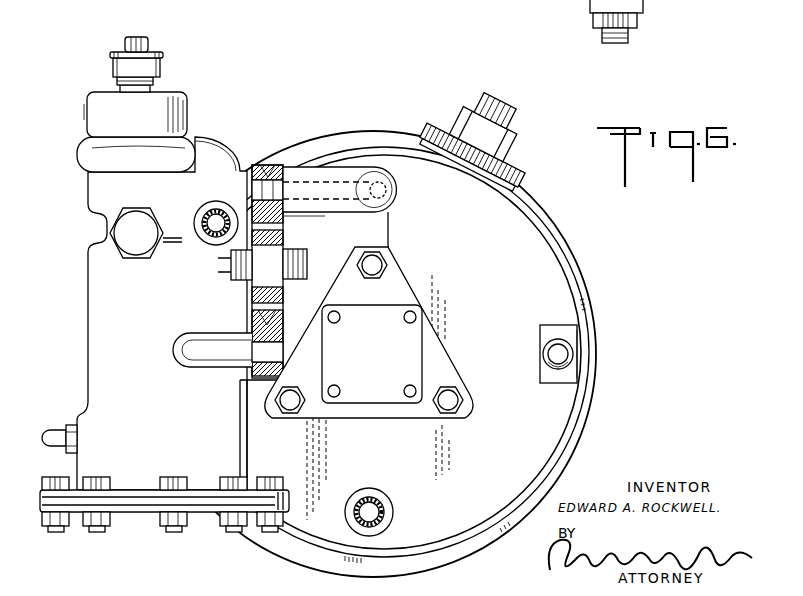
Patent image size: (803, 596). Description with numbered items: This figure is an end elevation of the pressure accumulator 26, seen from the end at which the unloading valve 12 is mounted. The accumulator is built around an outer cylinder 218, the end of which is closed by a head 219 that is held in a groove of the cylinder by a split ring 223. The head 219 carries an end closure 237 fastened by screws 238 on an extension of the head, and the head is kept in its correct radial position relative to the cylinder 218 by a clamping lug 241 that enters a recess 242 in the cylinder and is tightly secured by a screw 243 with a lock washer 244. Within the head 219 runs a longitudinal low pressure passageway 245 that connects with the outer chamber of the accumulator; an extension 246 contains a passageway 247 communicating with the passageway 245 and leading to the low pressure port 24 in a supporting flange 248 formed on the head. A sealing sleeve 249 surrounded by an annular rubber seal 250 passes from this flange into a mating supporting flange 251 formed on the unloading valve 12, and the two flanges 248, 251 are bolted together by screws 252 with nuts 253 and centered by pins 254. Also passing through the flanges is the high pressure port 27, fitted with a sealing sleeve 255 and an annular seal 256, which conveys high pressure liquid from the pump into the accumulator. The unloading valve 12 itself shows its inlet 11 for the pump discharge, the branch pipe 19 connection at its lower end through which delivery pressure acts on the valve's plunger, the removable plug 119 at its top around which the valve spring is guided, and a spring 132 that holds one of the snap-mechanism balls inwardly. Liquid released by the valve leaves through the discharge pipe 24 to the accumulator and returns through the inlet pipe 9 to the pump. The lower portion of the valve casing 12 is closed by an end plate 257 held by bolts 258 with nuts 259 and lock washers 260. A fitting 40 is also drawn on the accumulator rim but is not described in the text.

The inlet pipe 9 is at (392, 510).
The inlet 11 is at (208, 242).
The unloading valve 12 is at (86, 316).
The branch pipe 19 is at (52, 428).
The discharge pipe 24 is at (200, 197).
The pressure accumulator 26 is at (549, 220).
The high pressure port 27 is at (210, 360).
The fitting 40 is at (497, 142).
The removable plug 119 is at (149, 46).
The spring 132 is at (136, 213).
The outer cylinder 218 is at (381, 10).
The head 219 is at (386, 459).
The split ring 223 is at (568, 426).
The end closure 237 is at (430, 312).
The screws 238 is at (392, 266).
The clamping lug 241 is at (575, 343).
The recess 242 is at (578, 378).
The screw 243 is at (575, 354).
The lock washer 244 is at (560, 364).
The low pressure passageway 245 is at (395, 190).
The extension 246 is at (397, 213).
The passageway 247 is at (348, 203).
The supporting flange 248 is at (285, 322).
The sealing sleeve 249 is at (273, 172).
The annular seal 250 is at (265, 170).
The supporting flange 251 is at (257, 320).
The screws 252 is at (256, 288).
The nuts 253 is at (303, 260).
The pins 254 is at (285, 222).
The sealing sleeve 255 is at (262, 384).
The annular seal 256 is at (262, 372).
The end plate 257 is at (136, 514).
The bolts 258 is at (175, 478).
The nuts 259 is at (182, 530).
The lock washers 260 is at (222, 522).